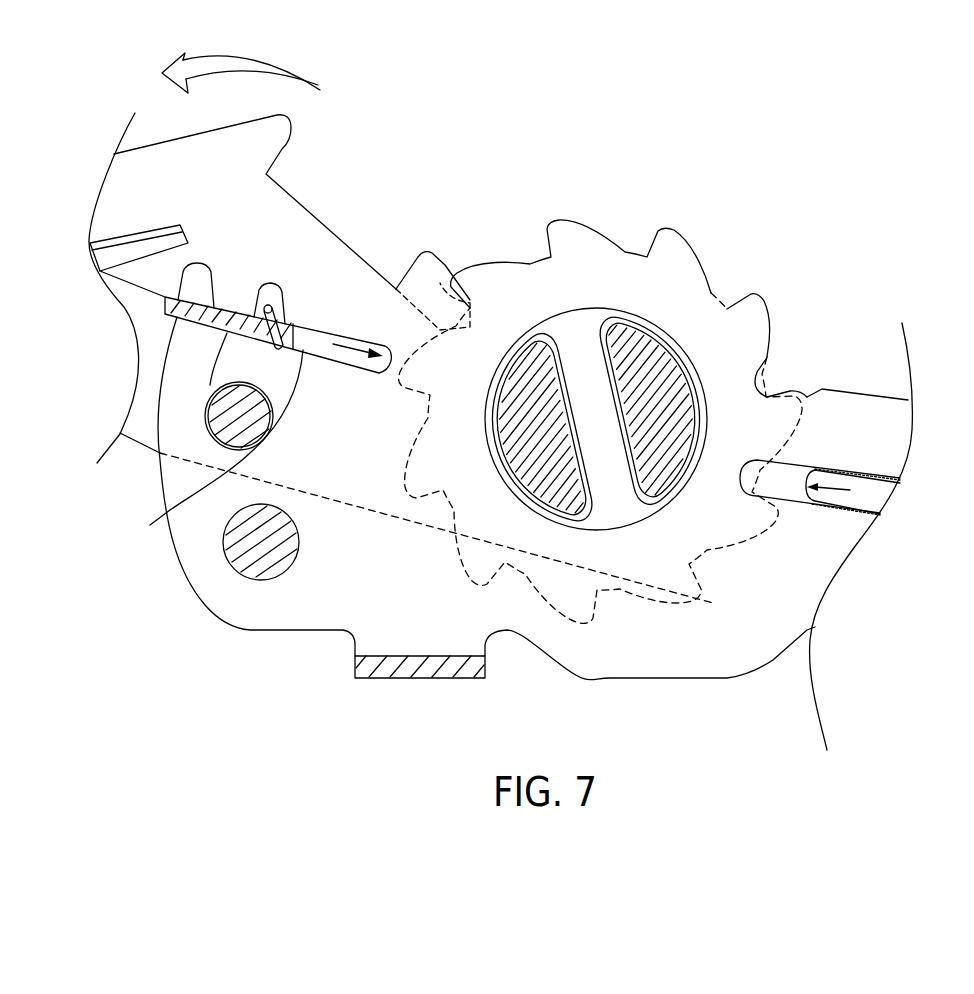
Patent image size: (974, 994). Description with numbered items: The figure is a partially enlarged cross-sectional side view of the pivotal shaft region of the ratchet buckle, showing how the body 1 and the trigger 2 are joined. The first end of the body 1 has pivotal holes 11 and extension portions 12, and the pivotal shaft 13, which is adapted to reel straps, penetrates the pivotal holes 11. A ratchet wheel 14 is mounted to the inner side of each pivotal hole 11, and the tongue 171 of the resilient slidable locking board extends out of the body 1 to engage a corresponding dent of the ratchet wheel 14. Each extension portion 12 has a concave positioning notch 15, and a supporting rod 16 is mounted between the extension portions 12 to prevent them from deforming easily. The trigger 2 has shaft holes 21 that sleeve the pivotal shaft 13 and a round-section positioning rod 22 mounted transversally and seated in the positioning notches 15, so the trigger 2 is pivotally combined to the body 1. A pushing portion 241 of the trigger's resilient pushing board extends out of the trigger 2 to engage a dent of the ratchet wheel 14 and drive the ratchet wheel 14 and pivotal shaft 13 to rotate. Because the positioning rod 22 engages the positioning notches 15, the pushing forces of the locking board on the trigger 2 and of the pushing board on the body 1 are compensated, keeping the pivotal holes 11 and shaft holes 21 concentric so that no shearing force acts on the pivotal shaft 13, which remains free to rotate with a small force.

The body 1 is at (851, 509).
The trigger 2 is at (314, 320).
The pivotal holes 11 is at (595, 518).
The extension portions 12 is at (192, 542).
The pivotal shaft 13 is at (636, 364).
The ratchet wheels 14 is at (675, 253).
The positioning notch 15 is at (208, 430).
The supporting rod 16 is at (265, 540).
The shaft holes 21 is at (628, 523).
The positioning rod 22 is at (237, 430).
The tongue 171 is at (857, 480).
The pushing portion 241 is at (323, 335).